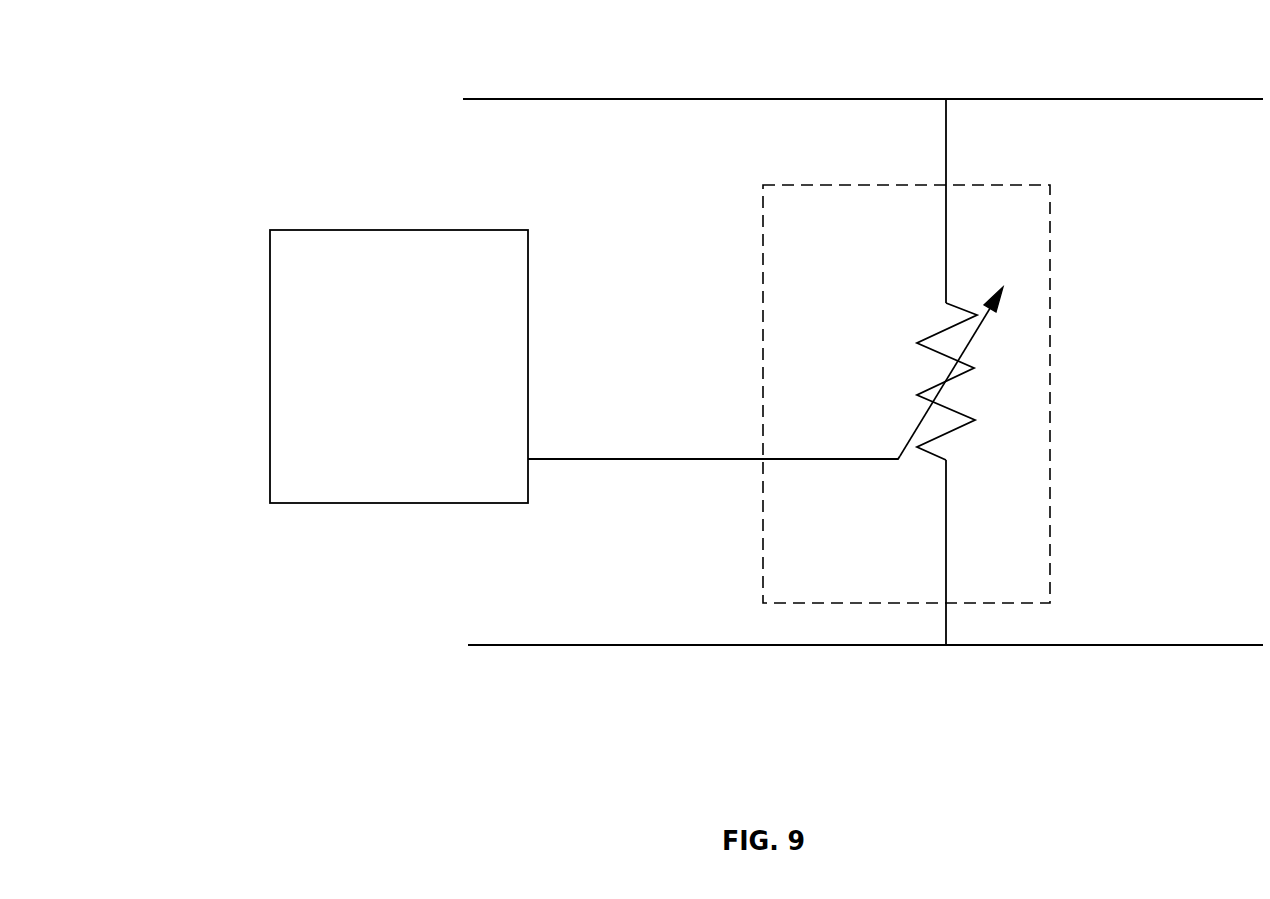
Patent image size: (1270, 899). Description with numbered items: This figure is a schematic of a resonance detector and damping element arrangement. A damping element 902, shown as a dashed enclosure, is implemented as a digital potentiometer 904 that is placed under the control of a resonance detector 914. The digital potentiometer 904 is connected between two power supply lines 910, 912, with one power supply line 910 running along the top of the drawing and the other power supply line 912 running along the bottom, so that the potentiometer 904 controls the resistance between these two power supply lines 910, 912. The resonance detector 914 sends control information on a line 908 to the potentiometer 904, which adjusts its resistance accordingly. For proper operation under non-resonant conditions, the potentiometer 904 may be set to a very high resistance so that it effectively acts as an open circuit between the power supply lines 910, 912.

The damping element 902 is at (1051, 283).
The digital potentiometer 904 is at (938, 375).
The line 908 is at (610, 459).
The power supply line 910 is at (620, 99).
The power supply line 912 is at (605, 645).
The resonance detector 914 is at (360, 228).